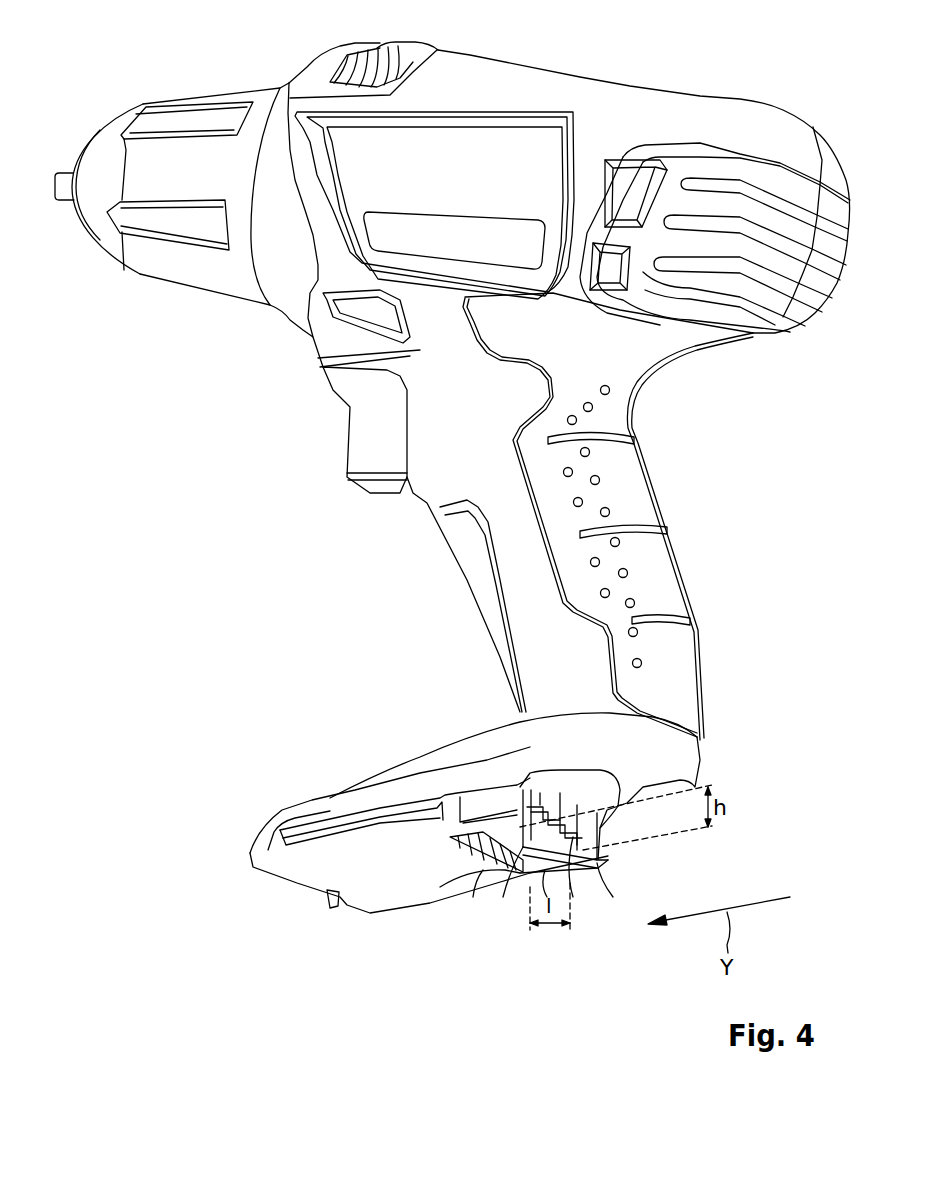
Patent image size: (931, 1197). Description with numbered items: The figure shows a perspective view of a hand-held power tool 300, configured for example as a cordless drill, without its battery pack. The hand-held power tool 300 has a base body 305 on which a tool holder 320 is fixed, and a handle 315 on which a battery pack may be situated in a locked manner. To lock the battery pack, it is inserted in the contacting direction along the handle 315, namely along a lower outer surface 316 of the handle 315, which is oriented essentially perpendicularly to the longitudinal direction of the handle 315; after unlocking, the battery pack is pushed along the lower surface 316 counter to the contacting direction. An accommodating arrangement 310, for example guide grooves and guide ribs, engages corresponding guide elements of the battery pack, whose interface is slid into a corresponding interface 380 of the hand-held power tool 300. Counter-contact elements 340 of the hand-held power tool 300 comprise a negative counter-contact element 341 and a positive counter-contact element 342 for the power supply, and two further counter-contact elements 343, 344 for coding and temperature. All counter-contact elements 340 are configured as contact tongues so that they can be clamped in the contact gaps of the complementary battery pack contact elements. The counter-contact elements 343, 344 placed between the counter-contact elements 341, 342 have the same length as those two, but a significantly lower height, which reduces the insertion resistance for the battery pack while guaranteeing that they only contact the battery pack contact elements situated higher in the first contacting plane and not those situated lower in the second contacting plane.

The hand-held power tool 300 is at (224, 480).
The base body 305 is at (523, 78).
The accommodating arrangement 310 is at (340, 830).
The handle 315 is at (640, 500).
The lower outer surface 316 is at (330, 903).
The tool holder 320 is at (189, 99).
The counter-contact elements 340 is at (613, 950).
The negative counter-contact element 341 is at (457, 880).
The positive counter-contact element 342 is at (563, 843).
The counter-contact element for coding 343 is at (497, 877).
The counter-contact element for temperature 344 is at (510, 883).
The interface 380 is at (590, 863).